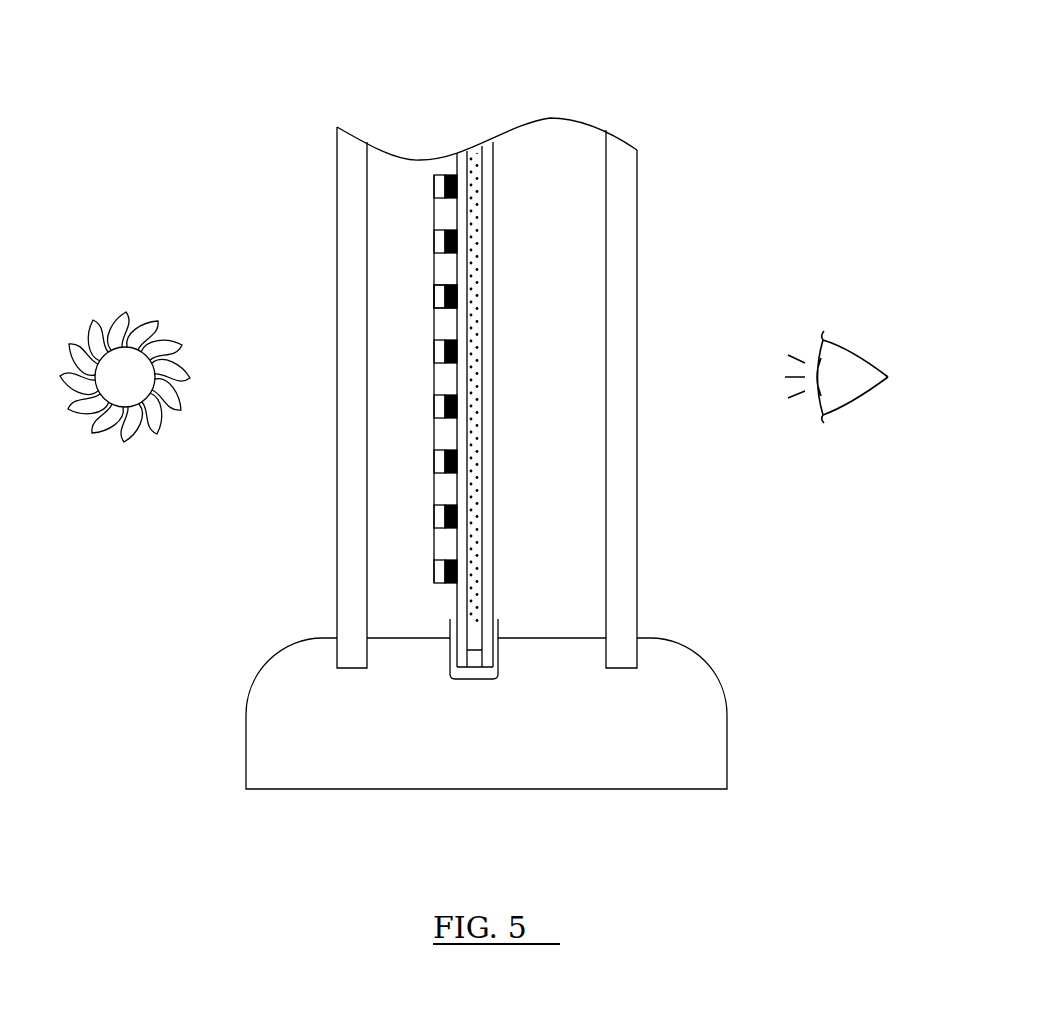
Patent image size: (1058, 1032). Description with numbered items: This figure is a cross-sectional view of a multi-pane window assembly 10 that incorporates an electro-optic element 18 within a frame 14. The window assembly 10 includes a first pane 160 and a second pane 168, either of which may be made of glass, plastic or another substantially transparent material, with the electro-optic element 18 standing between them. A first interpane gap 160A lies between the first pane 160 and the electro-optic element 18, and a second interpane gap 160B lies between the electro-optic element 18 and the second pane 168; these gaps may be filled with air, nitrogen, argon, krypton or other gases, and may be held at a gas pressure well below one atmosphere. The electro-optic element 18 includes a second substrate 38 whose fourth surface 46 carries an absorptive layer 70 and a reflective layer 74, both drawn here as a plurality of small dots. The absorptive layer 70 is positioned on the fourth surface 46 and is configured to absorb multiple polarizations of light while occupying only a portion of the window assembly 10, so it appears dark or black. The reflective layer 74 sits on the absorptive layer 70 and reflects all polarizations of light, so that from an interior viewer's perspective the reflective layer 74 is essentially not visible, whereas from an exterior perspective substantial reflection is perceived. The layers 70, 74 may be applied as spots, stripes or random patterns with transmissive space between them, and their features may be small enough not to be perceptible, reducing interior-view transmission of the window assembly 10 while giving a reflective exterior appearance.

The window assembly 10 is at (740, 54).
The frame 14 is at (693, 742).
The electro-optic element 18 is at (475, 679).
The second substrate 38 is at (470, 537).
The fourth surface 46 is at (457, 487).
The absorptive layer 70 is at (450, 308).
The reflective layer 74 is at (435, 243).
The first pane 160 is at (353, 653).
The first interpane gap 160A is at (446, 430).
The second interpane gap 160B is at (562, 458).
The second pane 168 is at (622, 659).